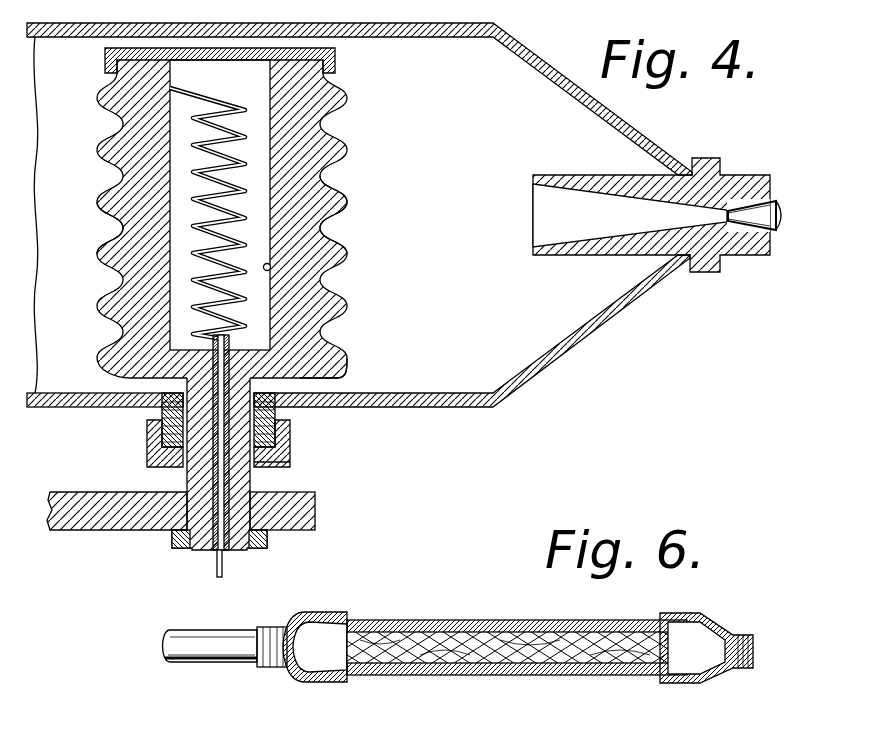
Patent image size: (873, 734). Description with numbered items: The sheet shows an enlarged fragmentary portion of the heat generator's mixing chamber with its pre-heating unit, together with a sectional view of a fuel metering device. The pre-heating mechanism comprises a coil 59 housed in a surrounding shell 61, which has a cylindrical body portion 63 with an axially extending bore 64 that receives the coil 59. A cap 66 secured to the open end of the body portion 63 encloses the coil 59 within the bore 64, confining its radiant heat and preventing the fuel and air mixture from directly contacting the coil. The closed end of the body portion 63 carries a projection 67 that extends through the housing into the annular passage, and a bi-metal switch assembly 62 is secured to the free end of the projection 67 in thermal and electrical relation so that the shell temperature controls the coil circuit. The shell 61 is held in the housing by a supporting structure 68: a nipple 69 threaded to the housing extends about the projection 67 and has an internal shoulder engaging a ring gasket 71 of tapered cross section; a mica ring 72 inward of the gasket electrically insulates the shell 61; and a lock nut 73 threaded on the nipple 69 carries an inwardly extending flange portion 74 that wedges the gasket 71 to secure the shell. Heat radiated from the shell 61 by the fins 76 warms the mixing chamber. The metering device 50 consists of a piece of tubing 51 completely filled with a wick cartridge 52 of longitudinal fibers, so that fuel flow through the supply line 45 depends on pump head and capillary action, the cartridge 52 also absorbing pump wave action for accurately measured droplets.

In FIG. 6, the fuel supply line 45 is at (242, 665).
In FIG. 6, the metering device 50 is at (517, 645).
In FIG. 6, the tubing 51 is at (474, 667).
In FIG. 6, the wick member or cartridge 52 is at (582, 630).
In FIG. 4, the coil 59 is at (227, 102).
In FIG. 4, the shell 61 is at (352, 148).
In FIG. 4, the bi-metal switch assembly 62 is at (92, 531).
In FIG. 4, the cylindrical body portion 63 is at (317, 205).
In FIG. 4, the bore 64 is at (272, 267).
In FIG. 4, the cap 66 is at (337, 62).
In FIG. 4, the projection 67 is at (190, 478).
In FIG. 4, the supporting structure 68 is at (148, 425).
In FIG. 4, the nipple 69 is at (308, 383).
In FIG. 4, the ring gasket 71 is at (292, 425).
In FIG. 4, the mica ring 72 is at (292, 470).
In FIG. 4, the lock nut 73 is at (292, 447).
In FIG. 4, the flange portion 74 is at (147, 462).
In FIG. 4, the fins 76 is at (118, 229).